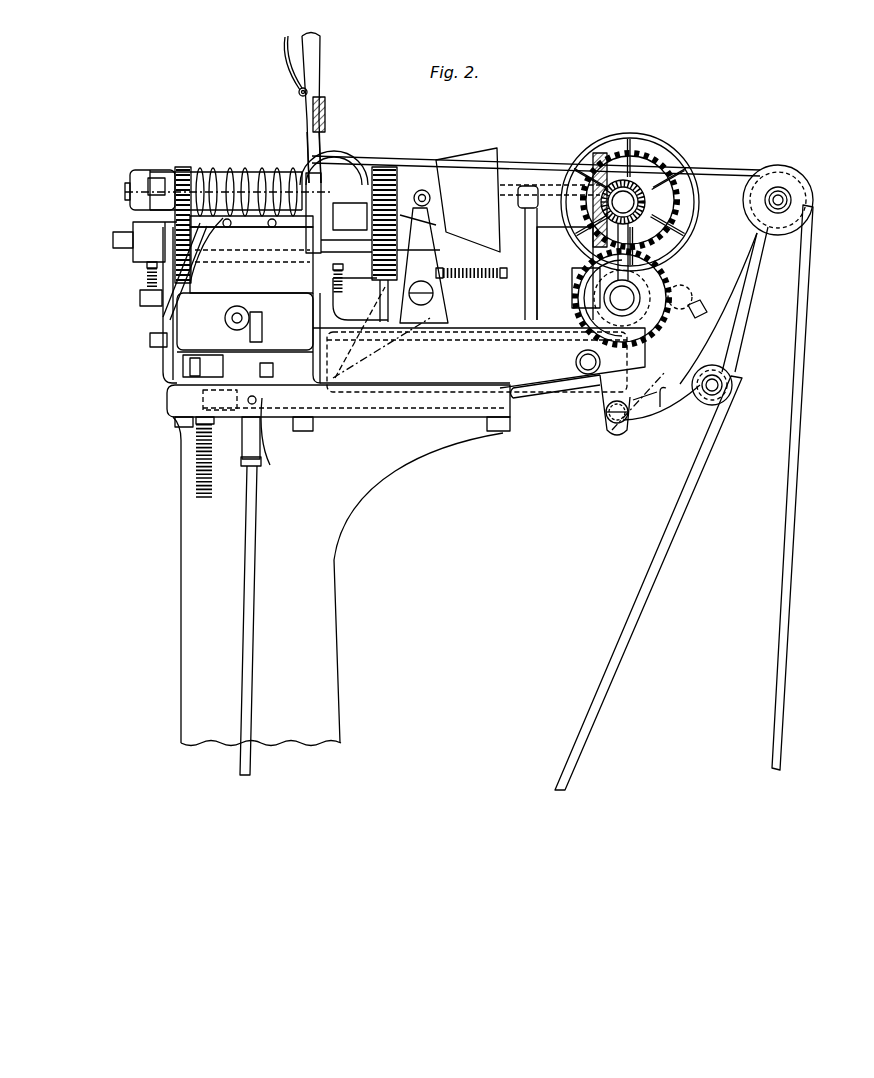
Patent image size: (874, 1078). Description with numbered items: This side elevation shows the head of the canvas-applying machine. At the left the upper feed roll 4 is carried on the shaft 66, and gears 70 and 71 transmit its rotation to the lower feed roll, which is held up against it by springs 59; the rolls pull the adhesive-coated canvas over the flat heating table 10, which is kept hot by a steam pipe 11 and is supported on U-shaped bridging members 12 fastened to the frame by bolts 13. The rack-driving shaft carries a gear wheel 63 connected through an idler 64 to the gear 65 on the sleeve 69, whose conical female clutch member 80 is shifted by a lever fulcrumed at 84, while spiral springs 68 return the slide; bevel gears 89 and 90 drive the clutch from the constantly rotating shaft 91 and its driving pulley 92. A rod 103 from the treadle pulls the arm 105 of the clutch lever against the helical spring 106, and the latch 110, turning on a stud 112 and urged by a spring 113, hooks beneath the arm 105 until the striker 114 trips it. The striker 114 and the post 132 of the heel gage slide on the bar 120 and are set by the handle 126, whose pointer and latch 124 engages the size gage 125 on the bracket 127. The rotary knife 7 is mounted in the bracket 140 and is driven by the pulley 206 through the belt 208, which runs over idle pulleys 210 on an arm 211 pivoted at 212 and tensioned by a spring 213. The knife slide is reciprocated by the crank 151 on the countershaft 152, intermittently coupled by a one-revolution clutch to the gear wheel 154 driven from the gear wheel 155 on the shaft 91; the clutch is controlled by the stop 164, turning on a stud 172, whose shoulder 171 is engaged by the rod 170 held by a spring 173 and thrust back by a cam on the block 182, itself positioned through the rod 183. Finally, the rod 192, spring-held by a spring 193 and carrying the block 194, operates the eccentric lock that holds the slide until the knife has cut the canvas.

The upper feed roll 4 is at (246, 172).
The rotary knife 7 is at (308, 175).
The heating table 10 is at (238, 172).
The steam pipe 11 is at (266, 172).
The U-shaped bridging members 12 is at (218, 162).
The bolts 13 is at (215, 280).
The springs 59 is at (150, 283).
The gear wheel 63 is at (430, 228).
The idler 64 is at (430, 200).
The gear 65 is at (372, 180).
The shaft 66 is at (130, 190).
The spiral or clock springs 68 is at (225, 296).
The sleeve 69 is at (392, 166).
The gear 70 is at (186, 166).
The gear 71 is at (140, 220).
The conical female clutch member 80 is at (492, 150).
The fulcrum 84 is at (434, 298).
The bevel gear 89 is at (628, 145).
The bevel gear 90 is at (658, 168).
The shaft 91 is at (650, 210).
The driving pulley 92 is at (590, 138).
The rod 103 is at (254, 518).
The arm 105 is at (300, 430).
The helical spring 106 is at (197, 470).
The latch 110 is at (190, 392).
The stud 112 is at (240, 366).
The spring 113 is at (190, 368).
The striker pin 114 is at (152, 338).
The bar 120 is at (175, 316).
The pointer and latch 124 is at (298, 92).
The size gage 125 is at (313, 115).
The handle 126 is at (320, 60).
The bracket 127 is at (326, 117).
The post 132 is at (140, 294).
The bracket 140 is at (368, 178).
The crank 151 is at (682, 288).
The countershaft 152 is at (665, 318).
The gear wheel 154 is at (655, 252).
The gear wheel 155 is at (641, 201).
The stop 164 is at (574, 298).
The rod 170 is at (475, 430).
The shoulder 171 is at (598, 400).
The stud 172 is at (577, 364).
The spring 173 is at (495, 355).
The block 182 is at (272, 466).
The rod 183 is at (432, 250).
The rod 192 is at (342, 302).
The spring 193 is at (462, 280).
The block 194 is at (552, 246).
The pulley 206 is at (350, 140).
The belt 208 is at (435, 156).
The idle pulleys 210 is at (813, 200).
The arm 211 is at (680, 420).
The pivot 212 is at (612, 424).
The spring 213 is at (660, 386).